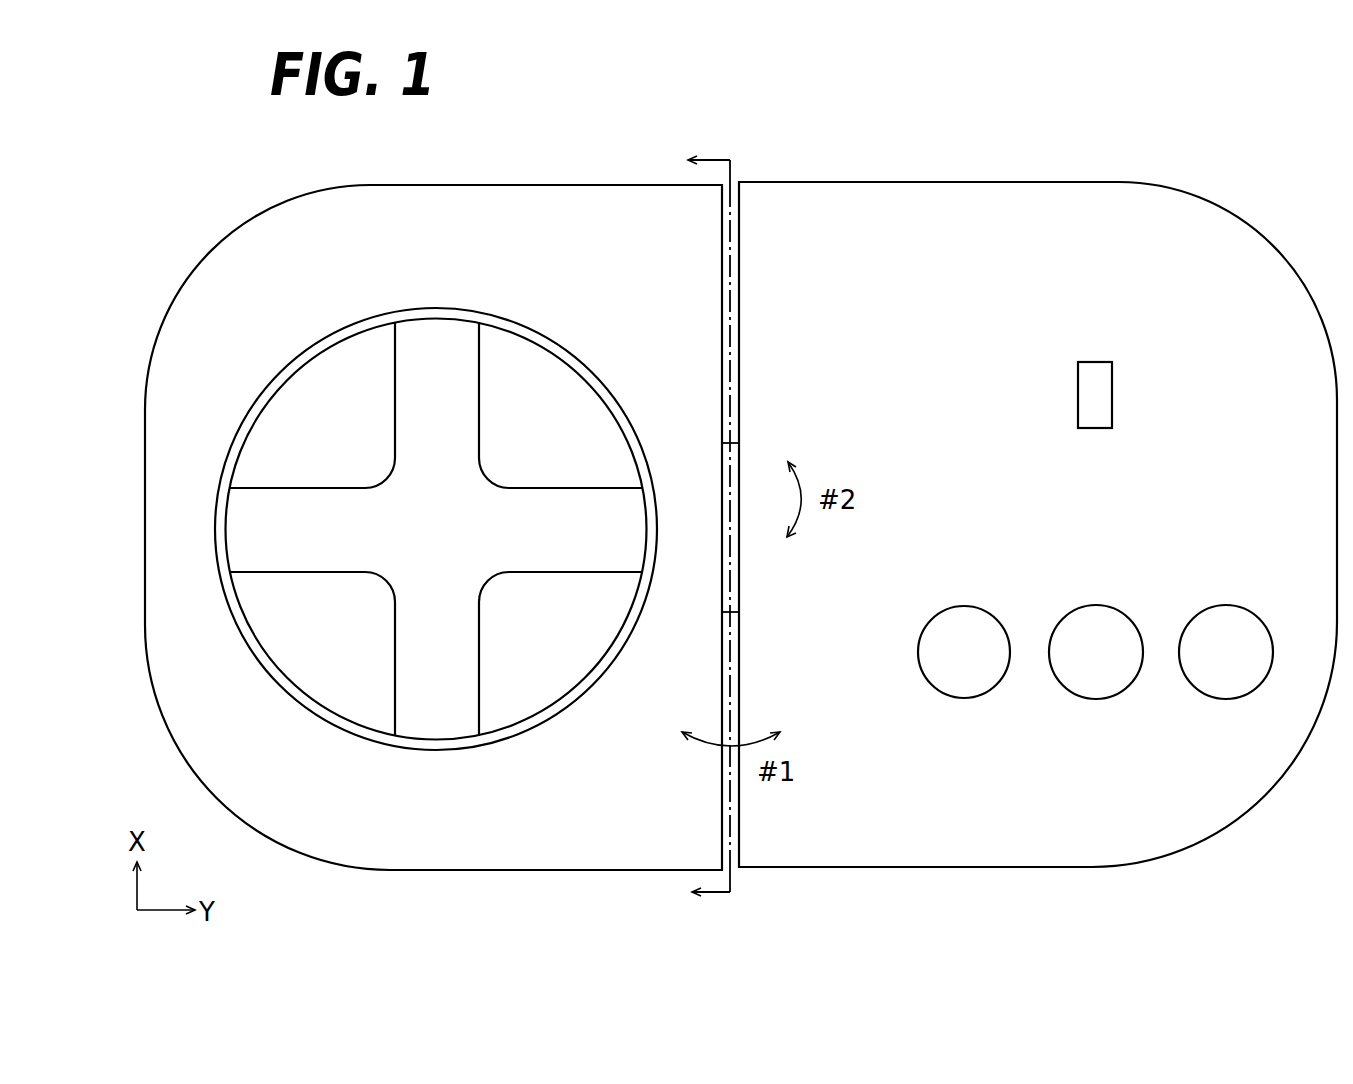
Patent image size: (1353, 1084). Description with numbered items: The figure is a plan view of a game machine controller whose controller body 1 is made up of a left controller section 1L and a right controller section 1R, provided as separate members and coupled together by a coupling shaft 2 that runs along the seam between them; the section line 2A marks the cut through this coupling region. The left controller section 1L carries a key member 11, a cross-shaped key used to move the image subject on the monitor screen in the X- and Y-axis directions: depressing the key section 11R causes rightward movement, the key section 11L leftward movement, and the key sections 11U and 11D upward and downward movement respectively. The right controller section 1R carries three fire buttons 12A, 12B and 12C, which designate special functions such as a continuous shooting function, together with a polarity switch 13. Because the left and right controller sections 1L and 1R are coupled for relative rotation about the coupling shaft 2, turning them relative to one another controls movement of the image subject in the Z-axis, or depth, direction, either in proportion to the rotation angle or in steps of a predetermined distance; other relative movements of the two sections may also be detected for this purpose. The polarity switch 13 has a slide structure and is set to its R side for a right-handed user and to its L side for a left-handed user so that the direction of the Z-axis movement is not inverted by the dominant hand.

The controller body 1 is at (741, 527).
The left controller section 1L is at (560, 185).
The right controller section 1R is at (995, 181).
The coupling shaft 2 is at (722, 571).
The section line 2A is at (707, 533).
The key member 11 is at (436, 529).
The key section 11U is at (437, 406).
The key section 11D is at (437, 654).
The key section 11L is at (298, 530).
The key section 11R is at (576, 530).
The fire button 12A is at (966, 617).
The fire button 12B is at (1098, 617).
The fire button 12C is at (1237, 617).
The polarity switch 13 is at (1096, 372).